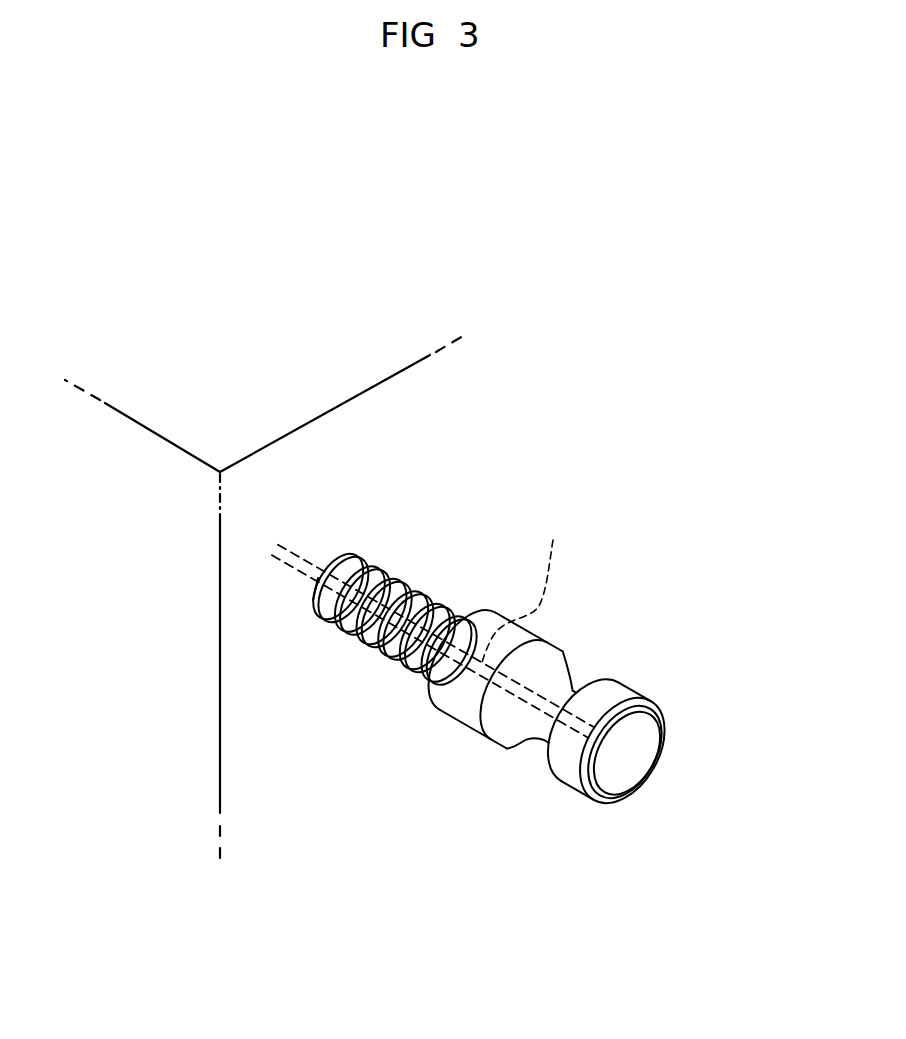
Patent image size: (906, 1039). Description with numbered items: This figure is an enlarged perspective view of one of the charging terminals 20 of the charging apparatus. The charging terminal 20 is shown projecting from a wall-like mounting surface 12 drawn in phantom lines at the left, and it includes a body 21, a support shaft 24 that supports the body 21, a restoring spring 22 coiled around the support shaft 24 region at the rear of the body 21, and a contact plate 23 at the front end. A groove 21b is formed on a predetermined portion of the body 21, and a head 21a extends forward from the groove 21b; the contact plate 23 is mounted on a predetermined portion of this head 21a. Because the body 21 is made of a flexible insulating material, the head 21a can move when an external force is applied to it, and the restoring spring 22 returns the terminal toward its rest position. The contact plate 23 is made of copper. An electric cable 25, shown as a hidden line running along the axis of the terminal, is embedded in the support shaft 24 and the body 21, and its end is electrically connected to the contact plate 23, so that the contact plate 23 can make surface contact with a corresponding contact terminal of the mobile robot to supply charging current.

The wall / frame member 12 is at (330, 446).
The charging terminal 20 is at (657, 587).
The body 21 is at (457, 712).
The head 21a is at (563, 773).
The groove 21b is at (500, 735).
The restoring spring 22 is at (392, 667).
The contact plate 23 is at (646, 761).
The support shaft 24 is at (313, 598).
The electric cable 25 is at (525, 588).